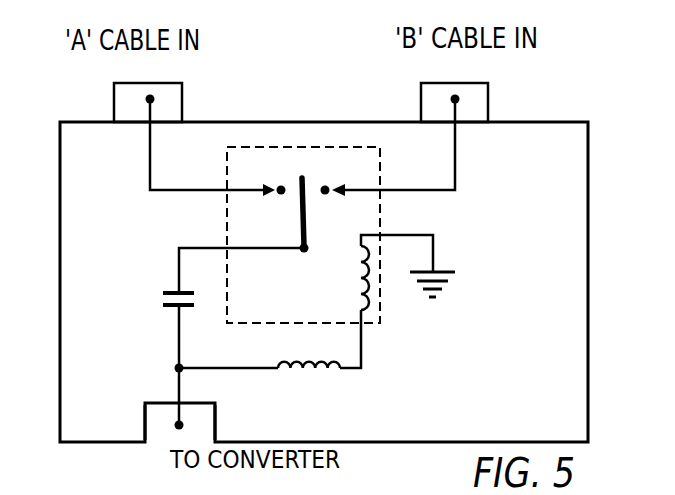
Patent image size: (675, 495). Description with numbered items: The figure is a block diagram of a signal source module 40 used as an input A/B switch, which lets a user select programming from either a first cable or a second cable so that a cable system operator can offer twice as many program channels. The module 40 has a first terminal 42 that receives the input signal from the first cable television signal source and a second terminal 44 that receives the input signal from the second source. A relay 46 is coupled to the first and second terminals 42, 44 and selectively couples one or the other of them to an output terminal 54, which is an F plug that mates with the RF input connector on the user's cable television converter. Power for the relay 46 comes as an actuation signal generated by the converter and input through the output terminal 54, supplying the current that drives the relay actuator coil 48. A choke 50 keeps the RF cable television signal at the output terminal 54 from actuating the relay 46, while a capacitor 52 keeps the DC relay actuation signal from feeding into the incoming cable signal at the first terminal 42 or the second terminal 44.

The signal source module 40 is at (590, 141).
The first terminal 42 is at (183, 101).
The second terminal 44 is at (421, 92).
The relay 46 is at (381, 310).
The relay actuator coil 48 is at (358, 268).
The choke 50 is at (316, 370).
The capacitor 52 is at (168, 306).
The output terminal 54 is at (147, 427).